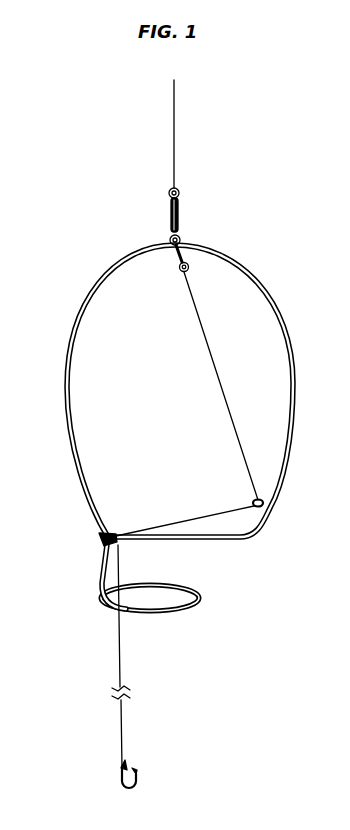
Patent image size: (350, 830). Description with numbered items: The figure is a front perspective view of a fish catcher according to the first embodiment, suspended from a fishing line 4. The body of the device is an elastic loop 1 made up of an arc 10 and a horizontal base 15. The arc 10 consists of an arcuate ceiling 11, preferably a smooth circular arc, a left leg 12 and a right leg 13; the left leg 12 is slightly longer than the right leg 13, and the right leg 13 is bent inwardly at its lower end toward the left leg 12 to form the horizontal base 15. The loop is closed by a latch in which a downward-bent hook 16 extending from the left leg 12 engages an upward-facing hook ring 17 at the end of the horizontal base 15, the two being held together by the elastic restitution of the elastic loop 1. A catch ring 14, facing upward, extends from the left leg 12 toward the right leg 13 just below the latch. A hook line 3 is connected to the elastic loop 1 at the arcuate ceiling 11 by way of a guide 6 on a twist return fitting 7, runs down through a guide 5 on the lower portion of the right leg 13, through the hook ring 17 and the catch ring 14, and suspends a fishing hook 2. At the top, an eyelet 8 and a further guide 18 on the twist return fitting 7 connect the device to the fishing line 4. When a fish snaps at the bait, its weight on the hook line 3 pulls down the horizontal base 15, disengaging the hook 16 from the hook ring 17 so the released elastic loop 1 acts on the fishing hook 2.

The elastic loop 1 is at (173, 399).
The fishing hook 2 is at (137, 790).
The hook line 3 is at (222, 392).
The fishing line 4 is at (175, 128).
The guide 5 is at (259, 498).
The guide 6 is at (181, 272).
The twist return fitting 7 is at (176, 235).
The eyelet 8 is at (182, 238).
The arc 10 is at (270, 309).
The arcuate ceiling 11 is at (143, 254).
The left leg 12 is at (66, 391).
The right leg 13 is at (292, 372).
The catch ring 14 is at (198, 606).
The horizontal base 15 is at (232, 540).
The hook 16 is at (101, 553).
The hook ring 17 is at (118, 536).
The guide 18 is at (180, 190).